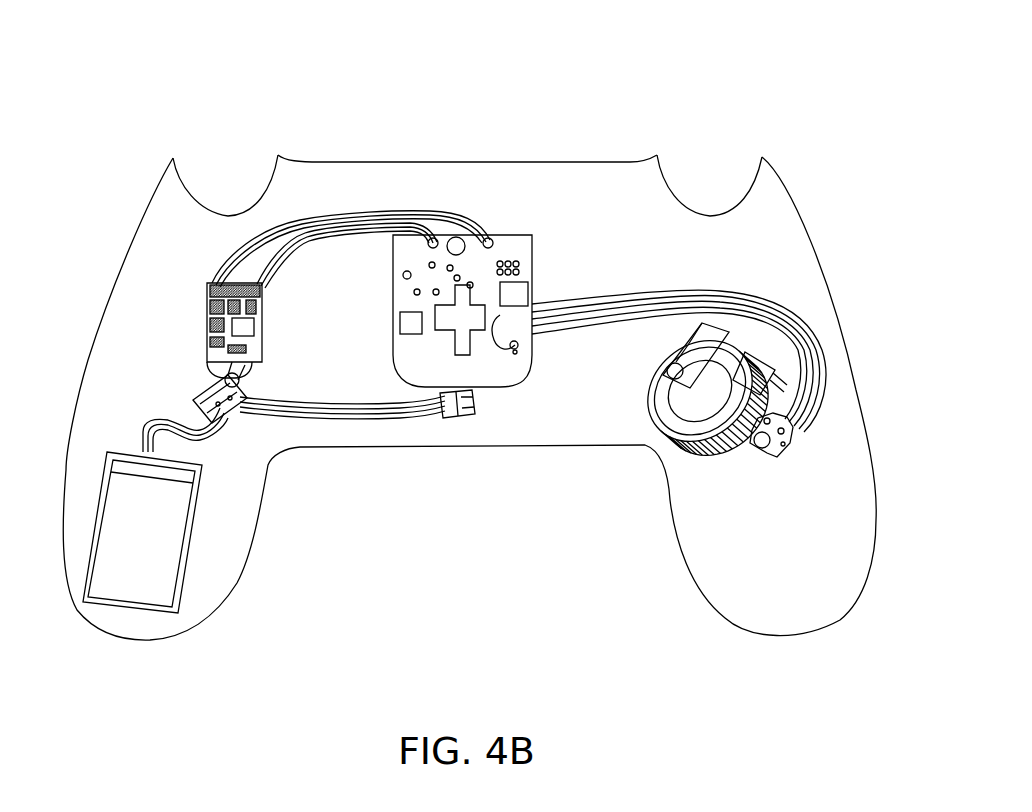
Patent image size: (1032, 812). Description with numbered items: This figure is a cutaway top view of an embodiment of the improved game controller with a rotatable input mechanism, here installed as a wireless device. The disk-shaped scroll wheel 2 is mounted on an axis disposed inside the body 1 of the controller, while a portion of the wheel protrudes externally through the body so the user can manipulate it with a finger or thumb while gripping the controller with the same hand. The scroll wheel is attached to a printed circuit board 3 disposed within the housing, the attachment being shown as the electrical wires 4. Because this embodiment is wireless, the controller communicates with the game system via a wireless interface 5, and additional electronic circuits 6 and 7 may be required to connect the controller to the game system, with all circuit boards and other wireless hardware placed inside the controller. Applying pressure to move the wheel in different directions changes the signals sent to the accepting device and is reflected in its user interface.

The body 1 is at (465, 136).
The wheel 2 is at (657, 460).
The printed circuit board 3 is at (546, 257).
The electrical wires 4 is at (791, 457).
The wireless interface 5 is at (207, 497).
The electronic circuit 6 is at (200, 390).
The electronic circuit 7 is at (267, 320).